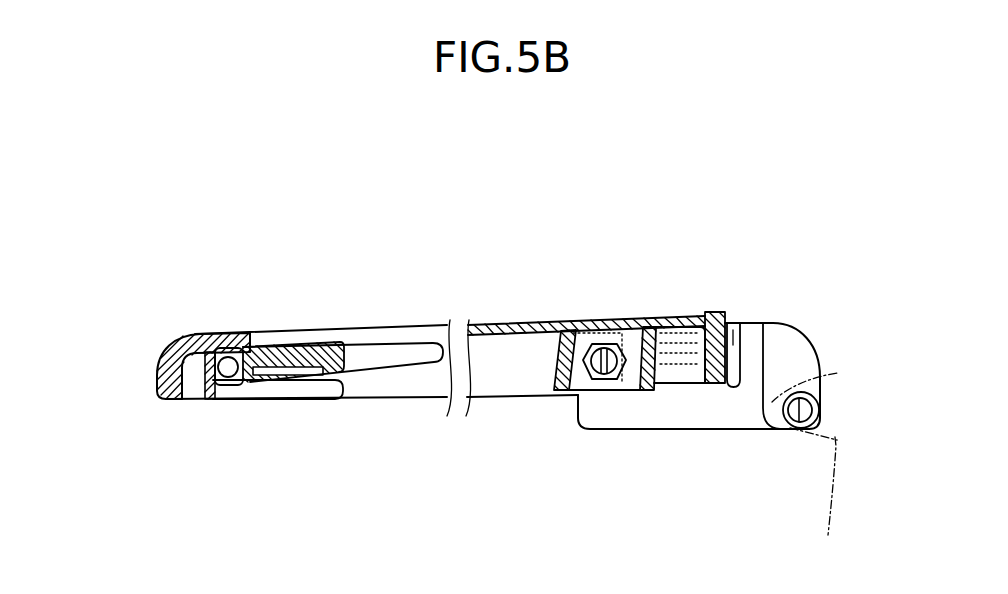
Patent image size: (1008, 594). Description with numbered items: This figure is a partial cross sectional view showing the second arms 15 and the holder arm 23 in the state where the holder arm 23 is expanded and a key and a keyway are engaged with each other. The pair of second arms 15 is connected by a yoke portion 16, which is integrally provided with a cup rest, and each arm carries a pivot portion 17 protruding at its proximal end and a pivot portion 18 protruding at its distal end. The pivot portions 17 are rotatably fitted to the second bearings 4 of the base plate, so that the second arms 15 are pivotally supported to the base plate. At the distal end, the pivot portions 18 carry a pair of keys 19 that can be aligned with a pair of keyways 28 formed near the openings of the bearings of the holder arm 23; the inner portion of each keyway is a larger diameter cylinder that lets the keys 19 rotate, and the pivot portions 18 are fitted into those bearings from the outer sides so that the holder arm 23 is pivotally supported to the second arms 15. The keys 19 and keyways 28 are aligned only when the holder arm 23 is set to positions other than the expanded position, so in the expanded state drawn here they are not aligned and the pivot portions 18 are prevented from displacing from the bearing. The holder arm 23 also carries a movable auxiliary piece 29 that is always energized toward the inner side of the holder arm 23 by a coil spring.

The second bearings 4 is at (804, 470).
The second arms 15 is at (703, 422).
The yoke portion 16 is at (793, 348).
The pivot portion 17 is at (788, 432).
The pivot portion 18 is at (600, 342).
The keys 19 is at (612, 345).
The holder arm 23 is at (155, 377).
The keyways 28 is at (596, 352).
The movable auxiliary piece 29 is at (333, 368).